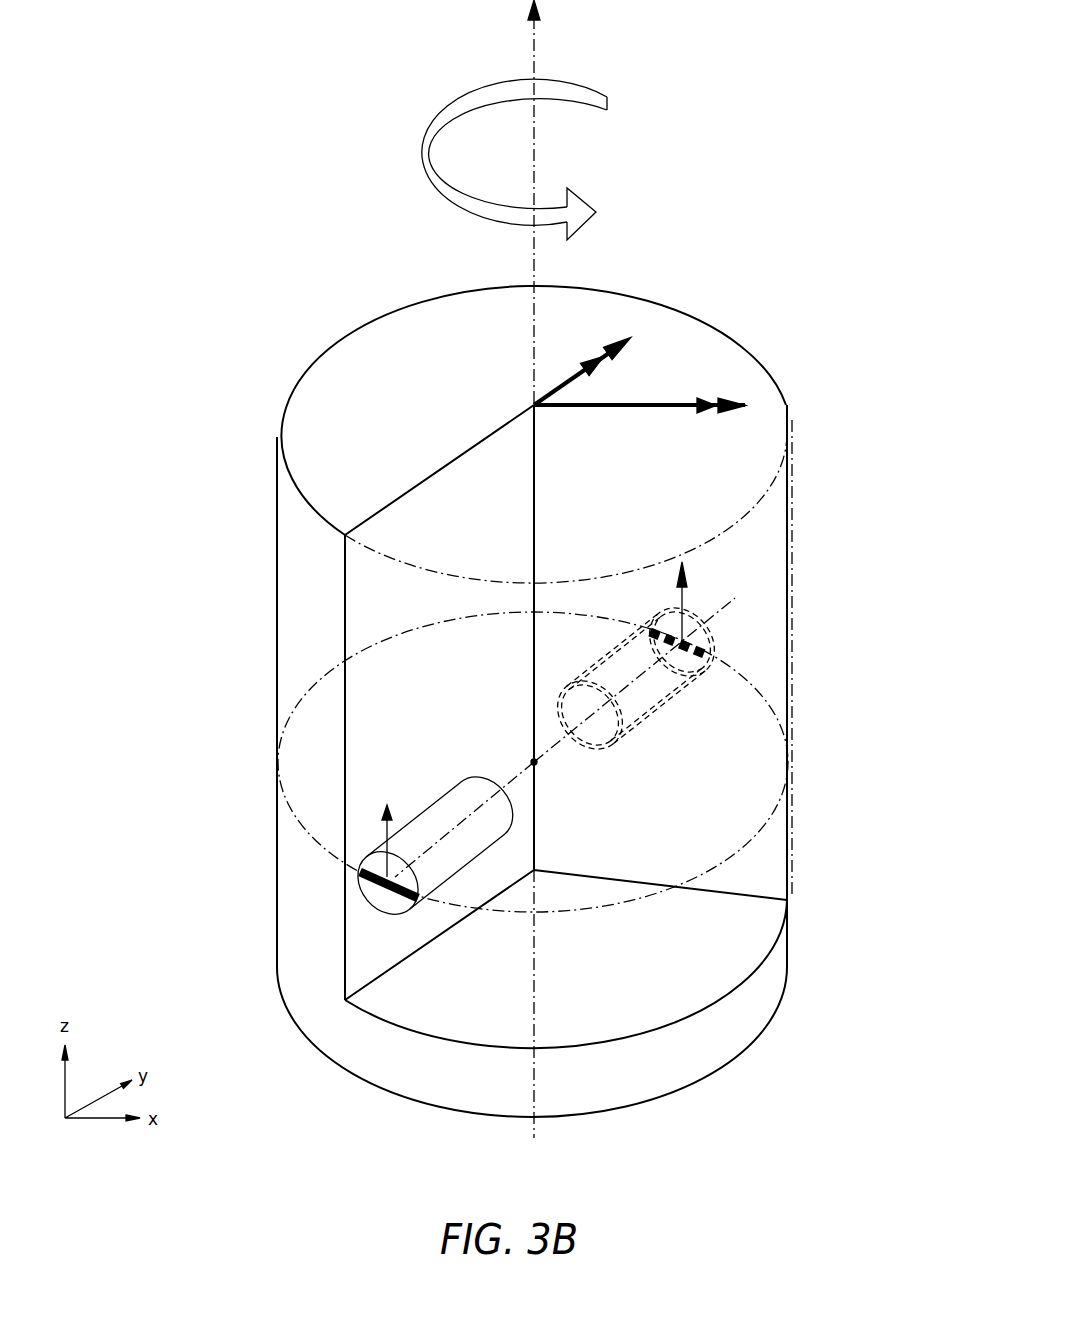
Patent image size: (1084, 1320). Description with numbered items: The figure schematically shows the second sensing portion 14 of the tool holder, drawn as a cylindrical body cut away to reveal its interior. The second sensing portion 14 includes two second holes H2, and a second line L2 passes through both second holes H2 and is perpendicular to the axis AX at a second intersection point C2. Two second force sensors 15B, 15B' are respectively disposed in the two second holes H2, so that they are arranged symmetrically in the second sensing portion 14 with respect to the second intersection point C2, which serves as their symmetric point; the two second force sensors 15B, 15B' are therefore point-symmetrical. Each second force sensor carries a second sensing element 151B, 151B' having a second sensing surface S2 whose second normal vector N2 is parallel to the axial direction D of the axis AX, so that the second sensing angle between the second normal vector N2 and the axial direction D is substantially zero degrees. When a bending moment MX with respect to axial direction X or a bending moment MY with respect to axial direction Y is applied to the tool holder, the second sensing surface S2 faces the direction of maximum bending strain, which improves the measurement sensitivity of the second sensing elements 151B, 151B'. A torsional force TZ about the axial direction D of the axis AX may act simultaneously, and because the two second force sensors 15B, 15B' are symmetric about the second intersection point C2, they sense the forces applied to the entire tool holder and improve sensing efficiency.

The second sensing portion 14 is at (119, 319).
The second force sensor 15B is at (329, 851).
The second sensing element 151B is at (272, 896).
The second force sensor 15B' is at (736, 668).
The second sensing element 151B' is at (797, 687).
The axial direction D is at (536, 38).
The torsional force TZ is at (528, 159).
The axis AX is at (537, 333).
The bending moment MX is at (647, 403).
The bending moment MY is at (567, 378).
The second intersection point C2 is at (534, 762).
The second hole H2 is at (468, 797).
The second sensing surface S2 is at (368, 852).
The second normal vector N2 is at (384, 840).
The second line L2 is at (545, 762).